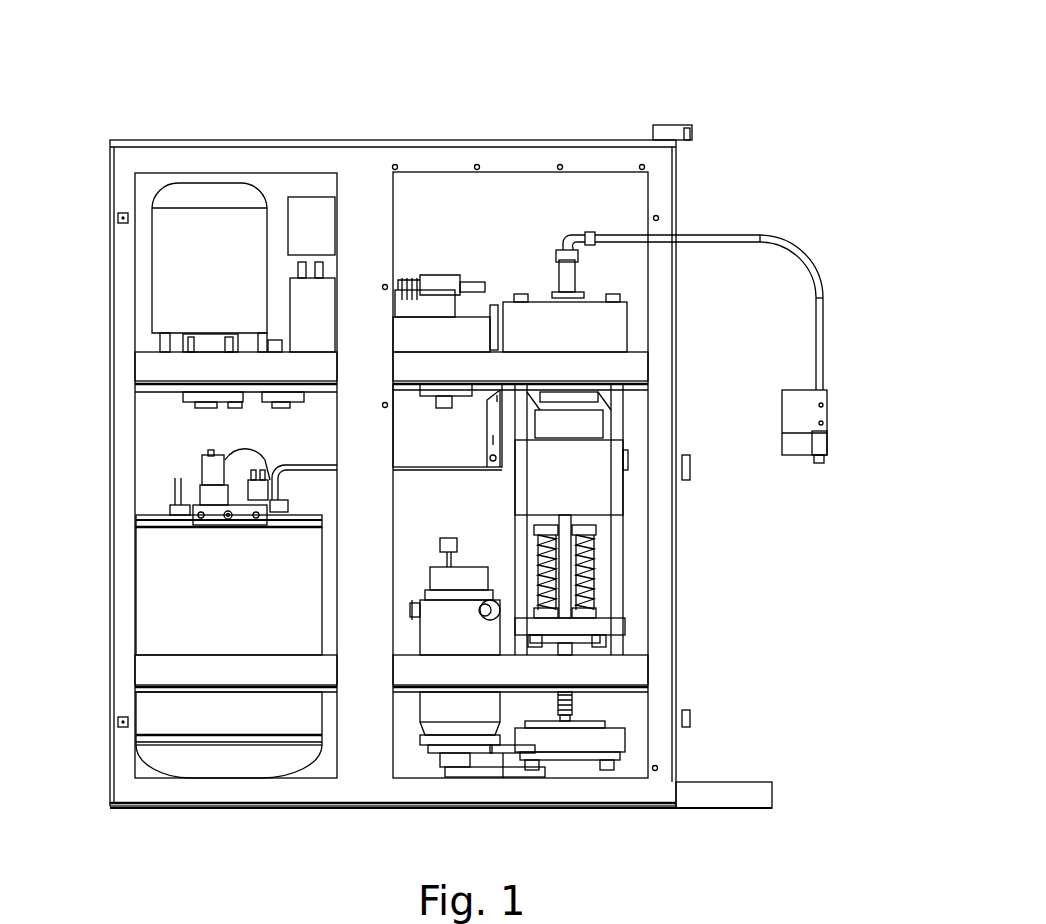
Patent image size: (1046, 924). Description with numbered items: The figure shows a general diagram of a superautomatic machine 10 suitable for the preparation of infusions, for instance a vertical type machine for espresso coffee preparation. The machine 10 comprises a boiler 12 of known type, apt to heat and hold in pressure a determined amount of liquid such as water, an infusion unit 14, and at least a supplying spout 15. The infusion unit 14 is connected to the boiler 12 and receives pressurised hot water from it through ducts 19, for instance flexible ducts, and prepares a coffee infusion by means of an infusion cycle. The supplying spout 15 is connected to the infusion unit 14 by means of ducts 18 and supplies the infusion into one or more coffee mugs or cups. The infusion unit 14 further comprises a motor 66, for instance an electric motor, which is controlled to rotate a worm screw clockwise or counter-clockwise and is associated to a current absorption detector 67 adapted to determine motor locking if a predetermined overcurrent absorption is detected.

The machine 10 is at (767, 104).
The boiler 12 is at (170, 602).
The infusion unit 14 is at (517, 255).
The supplying spout 15 is at (852, 388).
The ducts 18 is at (745, 237).
The ducts 19 is at (445, 470).
The motor 66 is at (480, 645).
The current absorption detector 67 is at (442, 538).